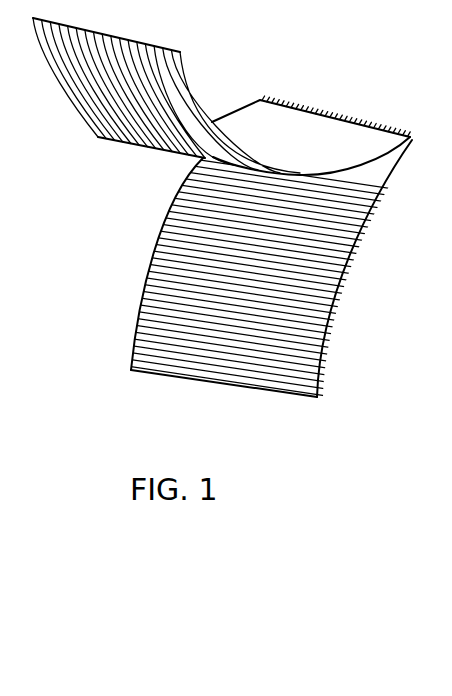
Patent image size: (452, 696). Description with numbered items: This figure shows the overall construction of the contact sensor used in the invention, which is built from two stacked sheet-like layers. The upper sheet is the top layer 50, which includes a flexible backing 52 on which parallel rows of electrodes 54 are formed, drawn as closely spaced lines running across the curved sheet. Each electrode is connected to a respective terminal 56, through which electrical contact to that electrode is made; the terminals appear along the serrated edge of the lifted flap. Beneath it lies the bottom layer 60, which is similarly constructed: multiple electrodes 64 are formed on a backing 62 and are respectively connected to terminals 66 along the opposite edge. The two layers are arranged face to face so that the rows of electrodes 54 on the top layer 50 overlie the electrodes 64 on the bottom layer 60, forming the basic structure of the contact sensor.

The top layer 50 is at (161, 89).
The flexible backing 52 is at (311, 119).
The electrodes 54 is at (100, 33).
The terminal 56 is at (329, 117).
The bottom layer 60 is at (240, 293).
The backing 62 is at (182, 377).
The electrodes 64 is at (143, 280).
The terminals 66 is at (324, 362).